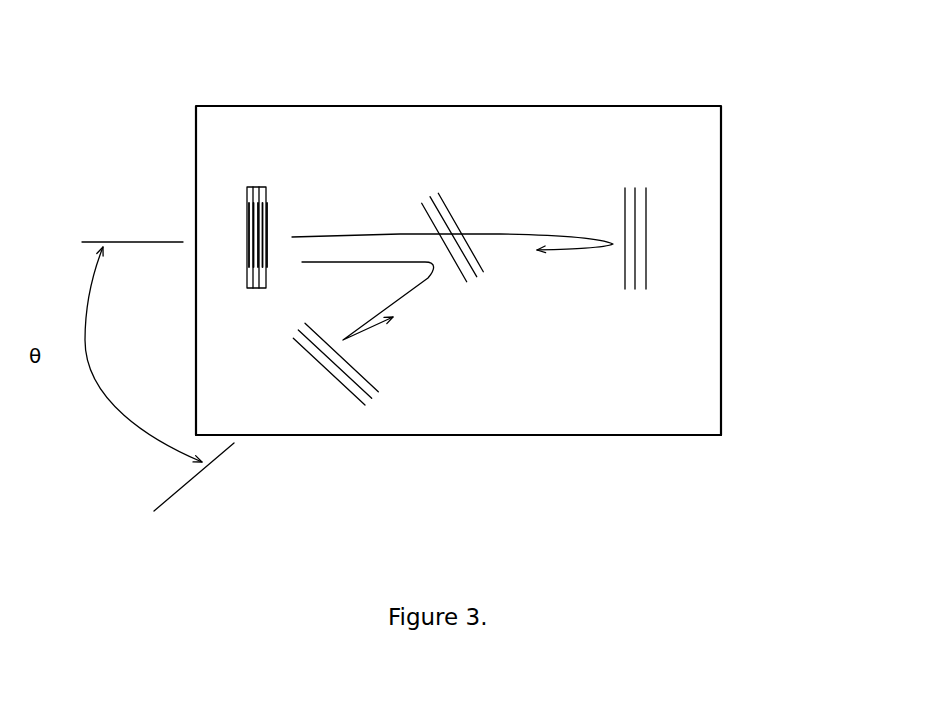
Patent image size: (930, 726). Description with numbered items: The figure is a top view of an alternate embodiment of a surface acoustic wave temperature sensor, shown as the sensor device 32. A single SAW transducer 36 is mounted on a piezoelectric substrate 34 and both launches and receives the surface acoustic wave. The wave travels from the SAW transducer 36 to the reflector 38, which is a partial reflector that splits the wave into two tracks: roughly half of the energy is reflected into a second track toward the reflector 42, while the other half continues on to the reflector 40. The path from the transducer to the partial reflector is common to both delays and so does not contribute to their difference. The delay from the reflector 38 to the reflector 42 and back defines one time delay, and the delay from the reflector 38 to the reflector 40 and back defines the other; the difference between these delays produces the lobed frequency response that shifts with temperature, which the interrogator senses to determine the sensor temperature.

The sensor device 32 is at (628, 92).
The piezoelectric substrate 34 is at (633, 438).
The SAW transducer 36 is at (240, 242).
The reflector 38 is at (434, 190).
The reflector 40 is at (654, 243).
The reflector 42 is at (325, 375).